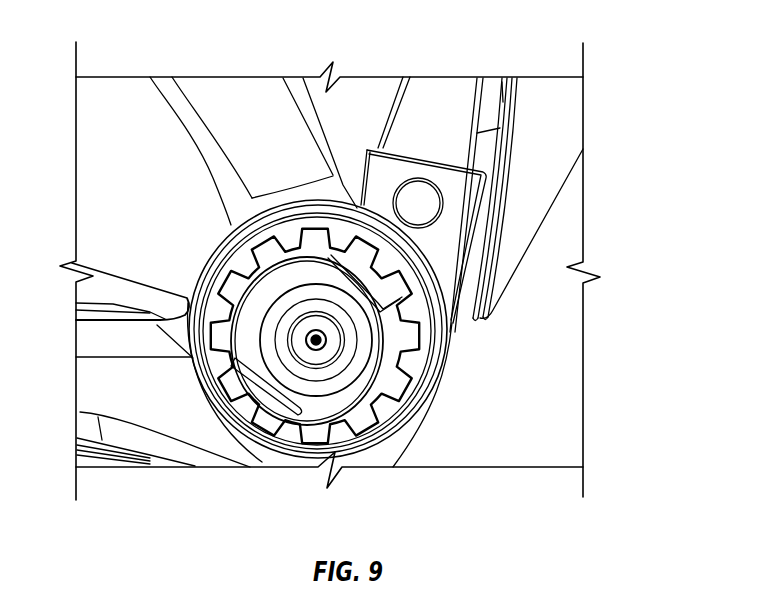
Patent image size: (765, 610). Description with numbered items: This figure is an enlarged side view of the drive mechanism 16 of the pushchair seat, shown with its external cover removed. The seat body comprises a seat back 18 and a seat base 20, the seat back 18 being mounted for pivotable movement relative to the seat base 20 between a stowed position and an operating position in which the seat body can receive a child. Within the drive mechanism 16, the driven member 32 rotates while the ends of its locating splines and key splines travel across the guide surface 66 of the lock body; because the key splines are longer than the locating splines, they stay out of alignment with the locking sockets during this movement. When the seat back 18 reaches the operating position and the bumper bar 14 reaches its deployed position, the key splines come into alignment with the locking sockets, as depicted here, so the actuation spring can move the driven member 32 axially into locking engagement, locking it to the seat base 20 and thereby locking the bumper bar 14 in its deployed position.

The bumper bar 14 is at (215, 112).
The drive mechanism 16 is at (462, 405).
The seat back 18 is at (558, 122).
The seat base 20 is at (152, 413).
The driven member 32 is at (273, 420).
The guide surface 66 is at (392, 418).